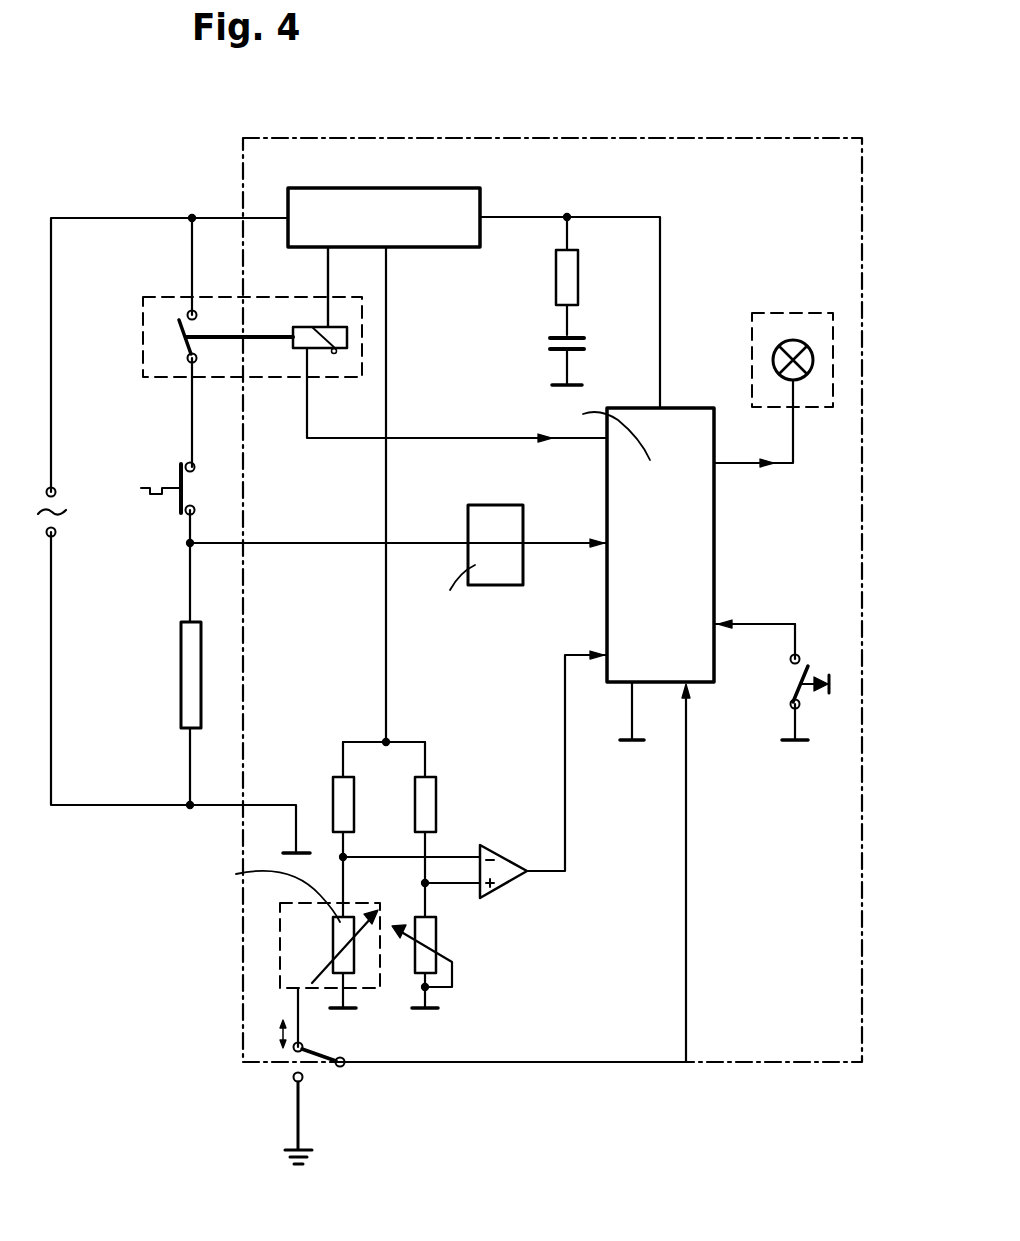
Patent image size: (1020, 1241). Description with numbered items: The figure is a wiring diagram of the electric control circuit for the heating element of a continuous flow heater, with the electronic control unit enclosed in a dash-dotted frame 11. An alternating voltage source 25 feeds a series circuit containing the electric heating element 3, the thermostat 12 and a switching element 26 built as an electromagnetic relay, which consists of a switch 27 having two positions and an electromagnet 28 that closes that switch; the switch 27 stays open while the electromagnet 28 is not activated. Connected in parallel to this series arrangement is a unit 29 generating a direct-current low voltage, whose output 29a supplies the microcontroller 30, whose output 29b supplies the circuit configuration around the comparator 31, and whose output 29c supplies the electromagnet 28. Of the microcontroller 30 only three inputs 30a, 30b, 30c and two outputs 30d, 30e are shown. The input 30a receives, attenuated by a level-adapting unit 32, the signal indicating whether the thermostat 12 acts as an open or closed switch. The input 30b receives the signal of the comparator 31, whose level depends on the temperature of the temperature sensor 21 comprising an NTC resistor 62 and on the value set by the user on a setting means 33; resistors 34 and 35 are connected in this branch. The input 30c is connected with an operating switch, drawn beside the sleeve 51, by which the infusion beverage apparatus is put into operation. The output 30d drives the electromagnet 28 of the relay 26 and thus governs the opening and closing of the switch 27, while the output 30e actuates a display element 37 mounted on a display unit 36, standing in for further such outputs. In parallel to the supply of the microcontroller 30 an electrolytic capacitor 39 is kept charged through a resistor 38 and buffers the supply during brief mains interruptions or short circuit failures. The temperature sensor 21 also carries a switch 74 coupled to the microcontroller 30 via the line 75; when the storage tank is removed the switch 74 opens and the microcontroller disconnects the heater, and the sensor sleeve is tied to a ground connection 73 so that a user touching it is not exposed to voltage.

The control unit 11 is at (775, 138).
The electric heating element 3 is at (181, 678).
The thermostat 12 is at (178, 474).
The temperature sensor 21 is at (280, 975).
The alternating voltage source 25 is at (56, 536).
The switching element 26 is at (143, 366).
The switch 27 is at (160, 334).
The electromagnet 28 is at (336, 352).
The unit for generating a direct-current low voltage 29 is at (400, 188).
The output 29a is at (485, 214).
The output 29b is at (386, 250).
The output 29c is at (328, 250).
The microcontroller 30 is at (698, 556).
The input 30a is at (607, 548).
The input 30b is at (607, 652).
The input 30c is at (716, 626).
The output 30d is at (607, 442).
The output 30e is at (716, 466).
The comparator 31 is at (505, 884).
The level-adapting unit 32 is at (490, 512).
The setting means 33 is at (430, 940).
The resistor 34 is at (343, 800).
The resistor 35 is at (428, 796).
The display unit 36 is at (800, 313).
The display element 37 is at (775, 362).
The resistor 38 is at (570, 284).
The electrolytic capacitor 39 is at (586, 346).
The sleeve 51 is at (792, 688).
The NTC resistor 62 is at (338, 934).
The ground connection 73 is at (300, 1140).
The switch 74 is at (325, 1056).
The line 75 is at (688, 914).